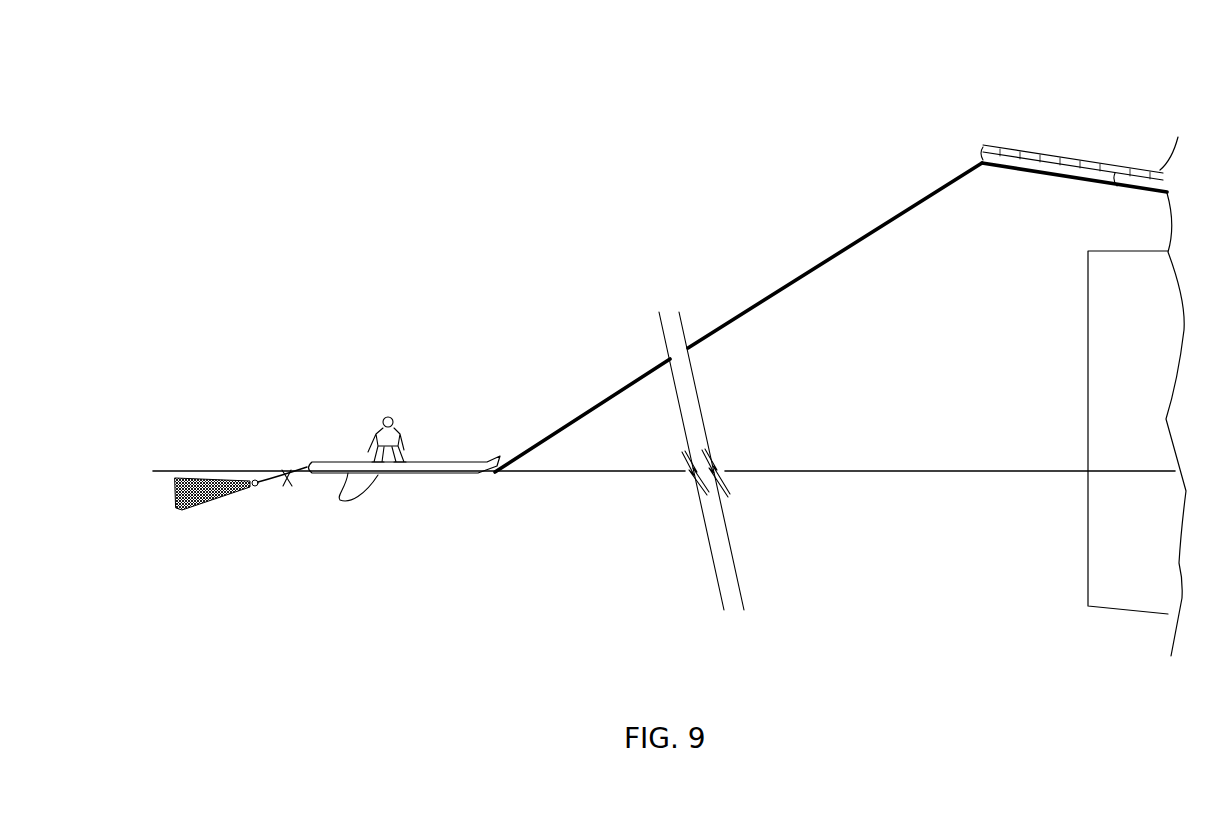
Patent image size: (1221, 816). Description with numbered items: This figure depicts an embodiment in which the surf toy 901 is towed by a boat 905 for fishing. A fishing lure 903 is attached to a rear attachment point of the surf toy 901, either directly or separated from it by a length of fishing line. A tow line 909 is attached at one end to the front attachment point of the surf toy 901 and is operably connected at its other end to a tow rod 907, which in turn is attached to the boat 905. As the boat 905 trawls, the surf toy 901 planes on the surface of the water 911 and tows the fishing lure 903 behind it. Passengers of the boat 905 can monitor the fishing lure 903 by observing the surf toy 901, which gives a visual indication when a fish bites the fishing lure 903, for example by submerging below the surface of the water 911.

The surf toy 901 is at (350, 470).
The fishing lure 903 is at (222, 497).
The boat 905 is at (1112, 580).
The tow rod 907 is at (1042, 150).
The tow line 909 is at (838, 250).
The surface of the water 911 is at (948, 471).